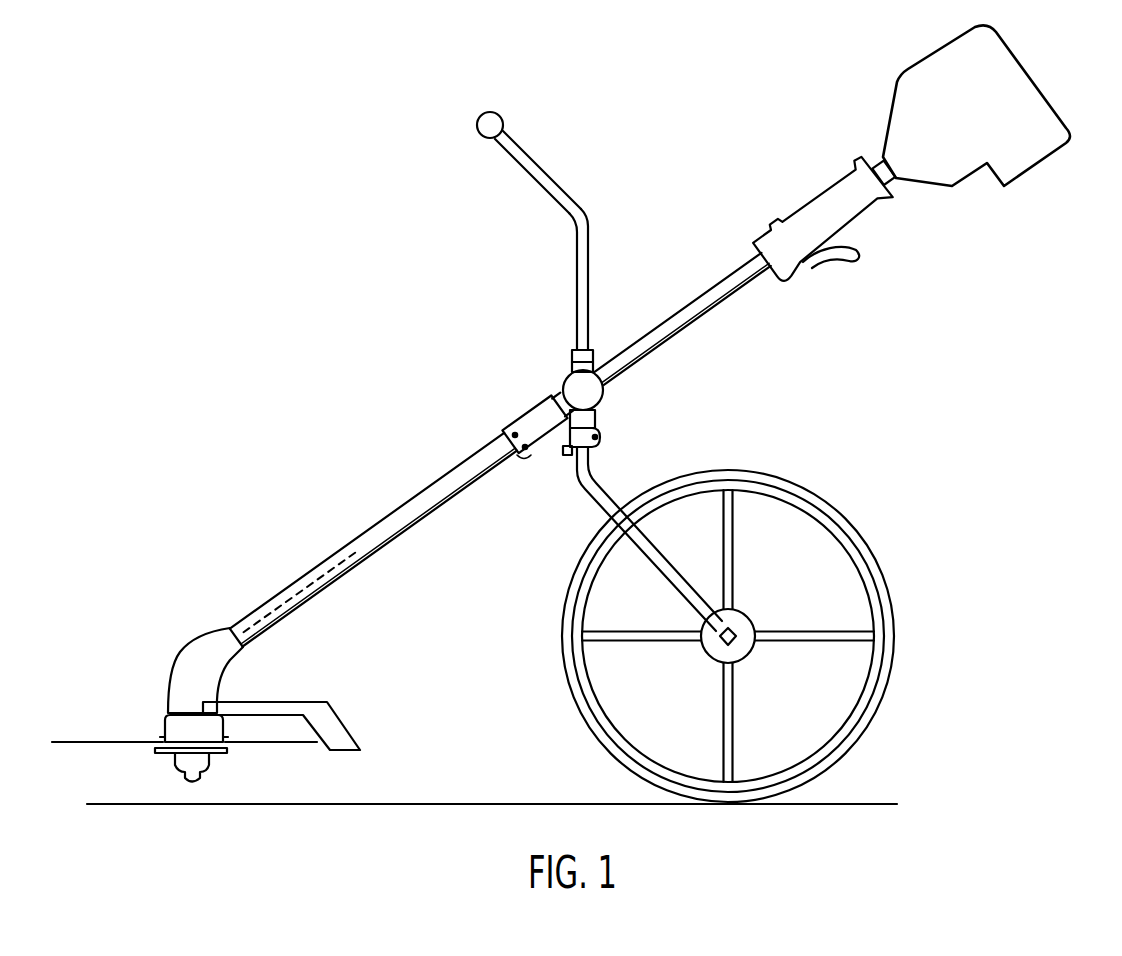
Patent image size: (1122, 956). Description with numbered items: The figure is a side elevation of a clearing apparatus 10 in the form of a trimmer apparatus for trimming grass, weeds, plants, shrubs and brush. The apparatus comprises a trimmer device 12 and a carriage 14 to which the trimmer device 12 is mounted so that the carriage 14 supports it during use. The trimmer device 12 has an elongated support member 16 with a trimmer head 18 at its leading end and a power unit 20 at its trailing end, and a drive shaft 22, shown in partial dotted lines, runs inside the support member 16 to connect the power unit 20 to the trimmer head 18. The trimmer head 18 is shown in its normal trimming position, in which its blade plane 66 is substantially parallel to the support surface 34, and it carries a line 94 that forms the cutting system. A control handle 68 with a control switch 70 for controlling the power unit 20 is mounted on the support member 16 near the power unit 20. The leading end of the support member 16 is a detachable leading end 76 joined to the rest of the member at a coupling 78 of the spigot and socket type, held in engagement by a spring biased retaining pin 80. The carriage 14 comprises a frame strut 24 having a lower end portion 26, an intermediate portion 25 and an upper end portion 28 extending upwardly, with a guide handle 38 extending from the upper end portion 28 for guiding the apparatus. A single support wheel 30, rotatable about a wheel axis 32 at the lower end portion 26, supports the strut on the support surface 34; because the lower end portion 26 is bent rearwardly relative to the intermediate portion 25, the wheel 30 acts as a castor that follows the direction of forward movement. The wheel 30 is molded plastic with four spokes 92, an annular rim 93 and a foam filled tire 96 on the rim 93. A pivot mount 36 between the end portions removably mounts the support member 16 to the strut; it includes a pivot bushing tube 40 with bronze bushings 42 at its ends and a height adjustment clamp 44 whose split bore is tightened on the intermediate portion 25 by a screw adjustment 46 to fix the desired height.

The clearing apparatus 10 is at (325, 328).
The trimmer device 12 is at (698, 128).
The carriage 14 is at (537, 565).
The elongated support member 16 is at (673, 322).
The trimmer head 18 is at (180, 633).
The power unit 20 is at (943, 162).
The drive shaft 22 is at (323, 555).
The frame strut 24 is at (533, 297).
The intermediate portion 25 is at (577, 255).
The lower end portion 26 is at (650, 543).
The upper end portion 28 is at (523, 157).
The support wheel 30 is at (897, 718).
The wheel axis 32 is at (727, 633).
The support surface 34 is at (580, 803).
The pivot mount 36 is at (607, 388).
The guide handle 38 is at (478, 128).
The pivot bushing tube 40 is at (572, 358).
The bronze bushings 42 is at (572, 352).
The height adjustment clamp 44 is at (568, 449).
The screw adjustment 46 is at (602, 437).
The blade plane 66 is at (367, 741).
The control handle 68 is at (820, 218).
The control switch 70 is at (833, 258).
The detachable leading end 76 is at (407, 510).
The coupling 78 is at (508, 408).
The spring biased retaining pin 80 is at (510, 435).
The spokes 92 is at (820, 635).
The annular rim 93 is at (875, 613).
The line 94 is at (107, 742).
The foam filled tire 96 is at (868, 537).